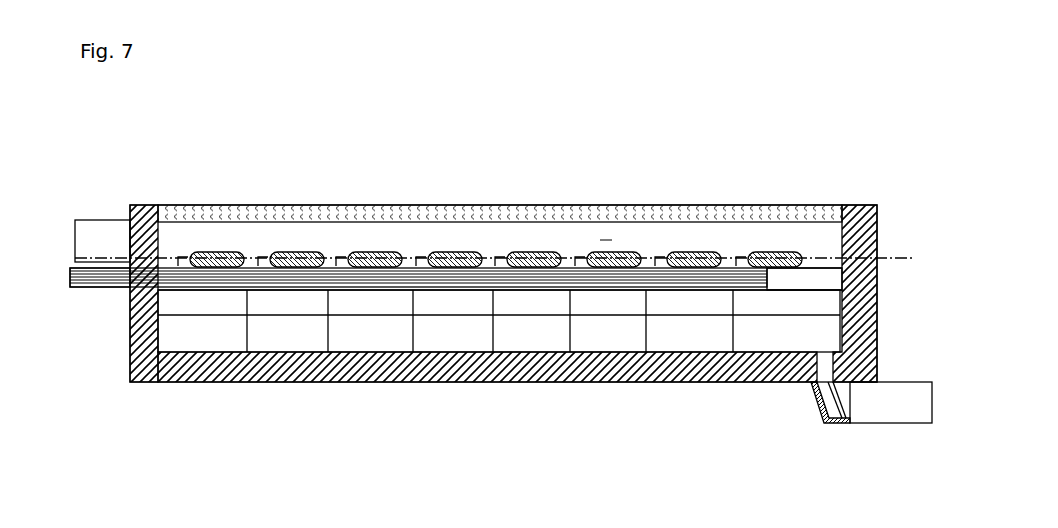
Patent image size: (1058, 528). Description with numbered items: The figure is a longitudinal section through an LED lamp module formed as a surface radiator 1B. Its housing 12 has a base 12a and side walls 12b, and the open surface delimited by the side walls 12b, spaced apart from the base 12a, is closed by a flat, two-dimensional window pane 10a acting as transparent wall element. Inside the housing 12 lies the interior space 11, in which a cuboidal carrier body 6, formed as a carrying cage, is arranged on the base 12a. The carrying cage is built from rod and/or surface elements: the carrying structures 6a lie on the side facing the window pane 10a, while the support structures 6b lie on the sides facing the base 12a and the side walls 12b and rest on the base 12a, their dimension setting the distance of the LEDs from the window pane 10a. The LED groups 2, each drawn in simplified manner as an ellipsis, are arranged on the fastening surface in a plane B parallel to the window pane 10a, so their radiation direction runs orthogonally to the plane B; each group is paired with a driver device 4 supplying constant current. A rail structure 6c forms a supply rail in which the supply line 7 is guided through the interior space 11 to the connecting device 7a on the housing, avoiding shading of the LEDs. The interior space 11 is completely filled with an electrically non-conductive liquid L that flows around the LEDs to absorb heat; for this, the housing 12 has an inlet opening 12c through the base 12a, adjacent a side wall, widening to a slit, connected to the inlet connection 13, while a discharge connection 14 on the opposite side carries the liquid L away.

The surface radiator 1B is at (224, 122).
The LED group 2 is at (302, 252).
The driver device 4 is at (262, 256).
The carrier body 6 is at (842, 278).
The carrying structure 6a is at (800, 268).
The support structure 6b is at (573, 332).
The rail structure 6c is at (800, 291).
The supply line 7 is at (296, 287).
The connecting device 7a is at (115, 290).
The window pane 10a is at (412, 205).
The interior space 11 is at (606, 238).
The electrically non-conductive liquid L is at (606, 238).
The housing 12 is at (140, 382).
The base 12a is at (205, 383).
The side wall 12b is at (877, 210).
The inlet opening 12c is at (815, 372).
The inlet connection 13 is at (900, 405).
The discharge connection 14 is at (108, 245).
The plane B is at (890, 258).